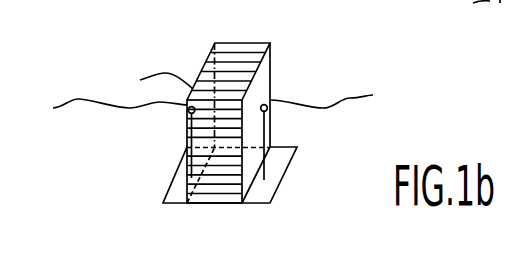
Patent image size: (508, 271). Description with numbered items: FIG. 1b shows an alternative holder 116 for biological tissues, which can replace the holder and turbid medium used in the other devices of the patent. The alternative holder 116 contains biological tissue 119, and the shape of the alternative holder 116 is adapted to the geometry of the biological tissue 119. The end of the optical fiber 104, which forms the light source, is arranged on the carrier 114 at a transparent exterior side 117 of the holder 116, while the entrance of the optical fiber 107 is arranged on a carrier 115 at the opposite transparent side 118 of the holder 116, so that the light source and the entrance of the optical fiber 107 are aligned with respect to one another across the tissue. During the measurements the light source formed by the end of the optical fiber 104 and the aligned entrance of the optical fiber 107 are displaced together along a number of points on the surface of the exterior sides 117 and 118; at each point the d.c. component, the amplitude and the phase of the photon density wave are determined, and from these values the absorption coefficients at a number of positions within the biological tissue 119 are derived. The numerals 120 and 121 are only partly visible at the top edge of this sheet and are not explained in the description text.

The optical fiber 104 is at (79, 99).
The optical fiber 107 is at (348, 98).
The carrier 114 is at (187, 128).
The carrier 115 is at (272, 128).
The alternative holder 116 is at (165, 205).
The transparent exterior side 117 is at (165, 73).
The opposite transparent side 118 is at (272, 68).
The biological tissue 119 is at (237, 43).
The element 120 is at (302, 0).
The element 121 is at (343, 3).